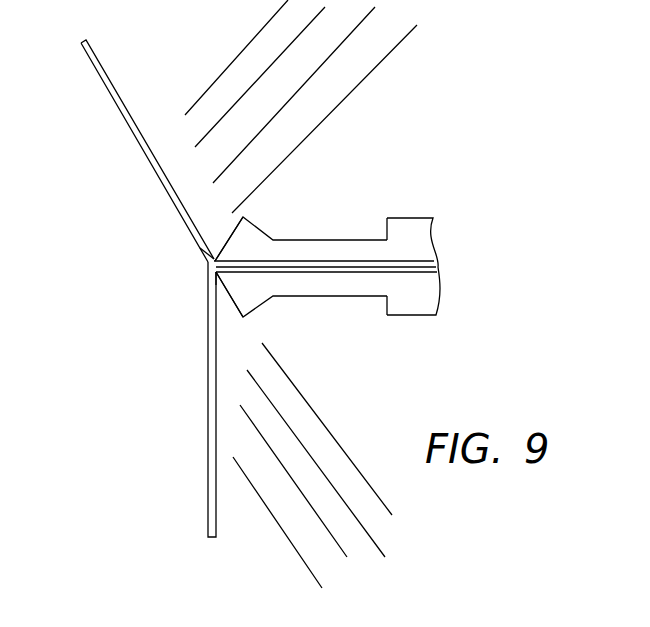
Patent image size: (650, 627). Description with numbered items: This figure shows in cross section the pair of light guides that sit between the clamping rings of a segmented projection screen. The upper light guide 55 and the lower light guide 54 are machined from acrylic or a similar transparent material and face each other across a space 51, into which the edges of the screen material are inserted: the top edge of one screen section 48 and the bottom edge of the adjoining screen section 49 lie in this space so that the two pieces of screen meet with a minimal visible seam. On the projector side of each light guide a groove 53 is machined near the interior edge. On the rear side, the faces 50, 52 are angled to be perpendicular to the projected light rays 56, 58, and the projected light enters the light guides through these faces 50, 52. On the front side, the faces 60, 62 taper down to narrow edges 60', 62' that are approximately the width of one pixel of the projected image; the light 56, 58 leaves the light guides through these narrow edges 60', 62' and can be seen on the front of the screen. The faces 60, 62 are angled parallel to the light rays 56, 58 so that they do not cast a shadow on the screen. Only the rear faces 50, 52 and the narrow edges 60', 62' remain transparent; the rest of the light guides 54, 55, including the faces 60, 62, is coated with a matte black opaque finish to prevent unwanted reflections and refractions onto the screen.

The screen section 48 is at (208, 402).
The screen section 49 is at (143, 157).
The rear face of upper light guide 50 is at (258, 227).
The space between light guides 51 is at (355, 273).
The rear face of lower light guide 52 is at (260, 305).
The groove 53 is at (353, 238).
The lower light guide 54 is at (400, 295).
The upper light guide 55 is at (414, 238).
The projected light rays 56 is at (323, 117).
The projected light rays 58 is at (327, 428).
The front face of upper light guide 60 is at (183, 239).
The narrow edge of upper light guide 60' is at (163, 262).
The front face of lower light guide 62 is at (178, 305).
The narrow edge of lower light guide 62' is at (159, 290).